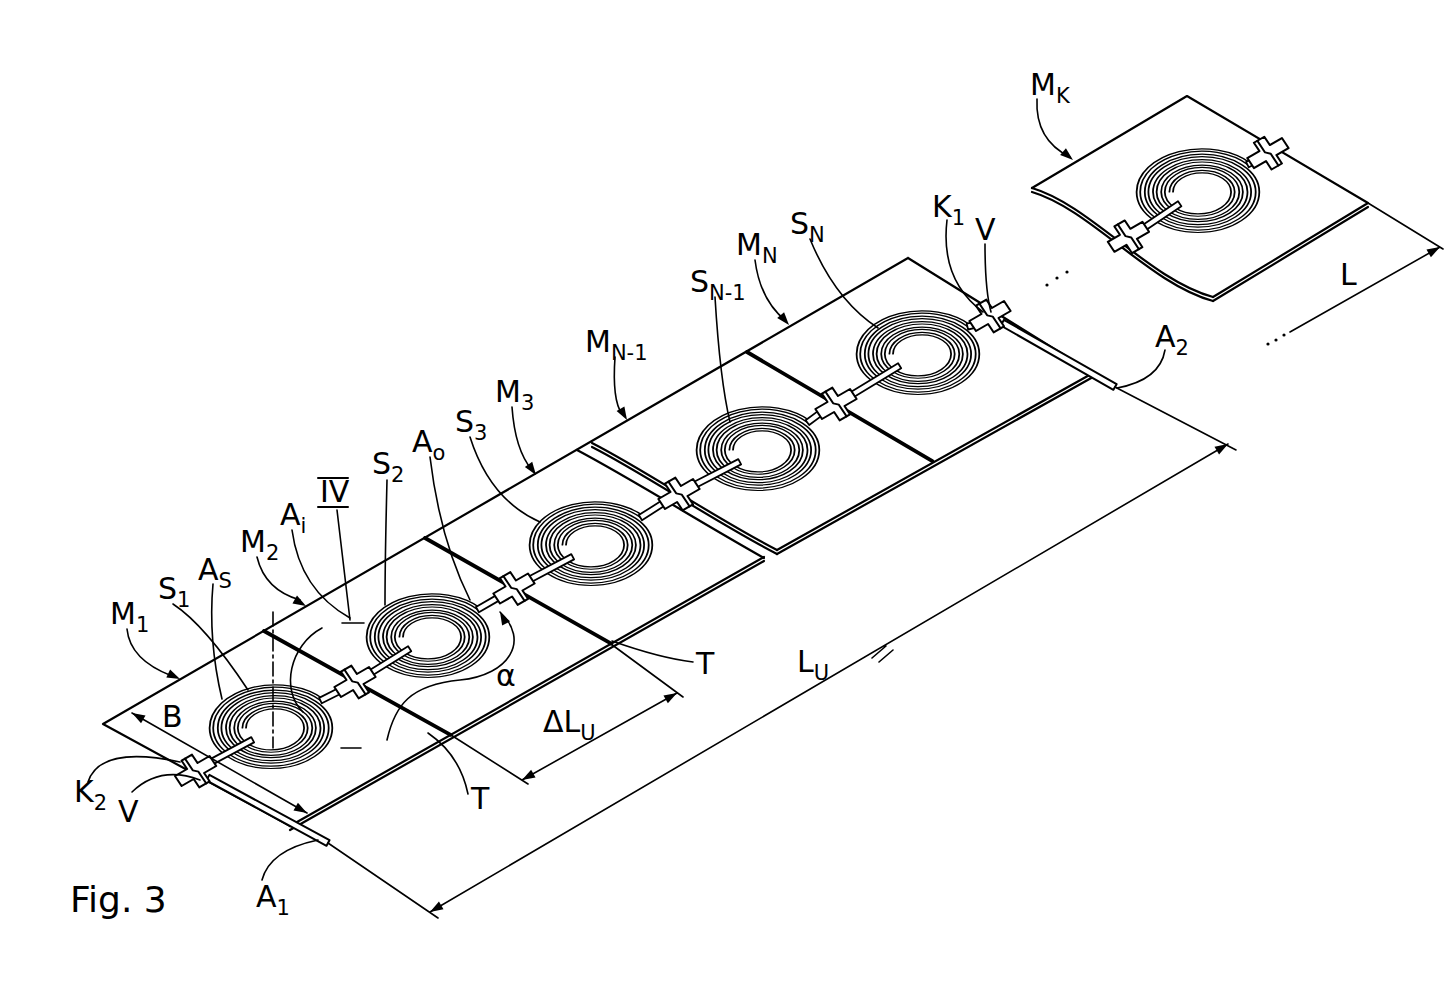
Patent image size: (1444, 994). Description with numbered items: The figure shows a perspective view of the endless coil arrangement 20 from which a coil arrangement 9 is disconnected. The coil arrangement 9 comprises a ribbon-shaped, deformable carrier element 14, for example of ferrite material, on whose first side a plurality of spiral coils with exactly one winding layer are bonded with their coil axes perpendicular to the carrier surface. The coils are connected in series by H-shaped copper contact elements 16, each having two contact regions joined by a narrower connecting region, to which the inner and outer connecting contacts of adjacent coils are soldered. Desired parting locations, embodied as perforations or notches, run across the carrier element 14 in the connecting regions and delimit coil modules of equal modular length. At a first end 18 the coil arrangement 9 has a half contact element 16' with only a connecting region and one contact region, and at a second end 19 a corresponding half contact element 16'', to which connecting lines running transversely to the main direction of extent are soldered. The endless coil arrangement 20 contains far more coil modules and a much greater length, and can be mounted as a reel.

The coil arrangement 9 is at (552, 400).
The carrier element 14 is at (688, 400).
The contact element 16 is at (595, 615).
The contact element 16' is at (187, 799).
The contact element 16'' is at (1012, 284).
The first end 18 is at (245, 802).
The second end 19 is at (1076, 371).
The endless coil arrangement 20 is at (1128, 106).